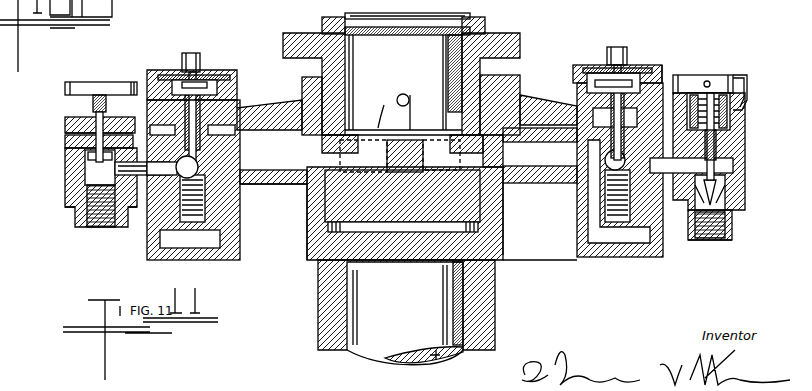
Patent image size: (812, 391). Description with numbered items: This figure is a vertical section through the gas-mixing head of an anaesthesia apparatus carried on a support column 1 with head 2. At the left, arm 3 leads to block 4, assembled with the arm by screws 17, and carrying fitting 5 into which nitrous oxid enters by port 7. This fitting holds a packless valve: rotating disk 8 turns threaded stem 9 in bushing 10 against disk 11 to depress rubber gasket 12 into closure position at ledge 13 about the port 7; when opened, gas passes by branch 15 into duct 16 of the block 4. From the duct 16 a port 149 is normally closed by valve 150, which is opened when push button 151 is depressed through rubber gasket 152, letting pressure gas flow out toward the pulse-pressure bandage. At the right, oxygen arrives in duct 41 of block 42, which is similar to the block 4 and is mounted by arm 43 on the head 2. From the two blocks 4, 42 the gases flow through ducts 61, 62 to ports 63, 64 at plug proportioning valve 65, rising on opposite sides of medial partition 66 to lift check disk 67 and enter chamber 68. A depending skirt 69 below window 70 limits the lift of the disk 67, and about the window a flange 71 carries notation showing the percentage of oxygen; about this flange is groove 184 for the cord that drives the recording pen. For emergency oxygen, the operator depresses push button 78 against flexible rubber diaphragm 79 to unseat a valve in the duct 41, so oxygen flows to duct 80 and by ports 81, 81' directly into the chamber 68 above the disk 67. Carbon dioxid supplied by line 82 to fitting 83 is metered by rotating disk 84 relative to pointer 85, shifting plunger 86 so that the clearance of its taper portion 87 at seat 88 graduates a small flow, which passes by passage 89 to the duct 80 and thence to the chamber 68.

The column 1 is at (372, 358).
The head 2 is at (503, 258).
The arm 3 is at (265, 184).
The block 4 is at (243, 238).
The fitting 5 is at (66, 160).
The port 7 is at (65, 181).
The disk 8 is at (106, 72).
The threaded stem 9 is at (94, 105).
The bushing 10 is at (70, 124).
The disk 11 is at (68, 140).
The rubber gasket 12 is at (66, 150).
The ledge 13 is at (70, 168).
The branch 15 is at (121, 228).
The duct 16 is at (200, 162).
The screws 17 is at (553, 208).
The duct 41 is at (600, 190).
The block 42 is at (590, 257).
The arm 43 is at (524, 183).
The duct 61 is at (290, 108).
The duct 62 is at (560, 105).
The port 63 is at (325, 160).
The port 64 is at (486, 150).
The plug proportioning valve 65 is at (580, 70).
The medial partition 66 is at (388, 161).
The disk 67 is at (386, 104).
The chamber 68 is at (410, 102).
The skirt 69 is at (450, 76).
The window 70 is at (432, 28).
The flange 71 is at (500, 48).
The push button 78 is at (628, 55).
The flexible rubber diaphragm 79 is at (663, 73).
The duct 80 is at (602, 73).
The port 81 is at (439, 155).
The port 81' is at (421, 101).
The line 82 is at (705, 256).
The fitting 83 is at (747, 165).
The disk 84 is at (722, 75).
The pointer 85 is at (749, 86).
The plunger 86 is at (736, 160).
The taper portion 87 is at (735, 193).
The seat 88 is at (690, 237).
The passage 89 is at (662, 150).
The port 149 is at (243, 92).
The valve 150 is at (215, 130).
The push button 151 is at (201, 66).
The rubber gasket 152 is at (176, 72).
The groove 184 is at (547, 52).